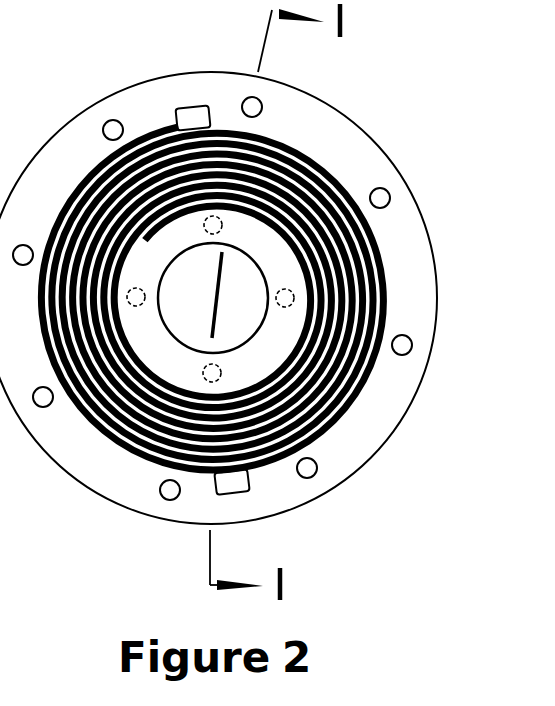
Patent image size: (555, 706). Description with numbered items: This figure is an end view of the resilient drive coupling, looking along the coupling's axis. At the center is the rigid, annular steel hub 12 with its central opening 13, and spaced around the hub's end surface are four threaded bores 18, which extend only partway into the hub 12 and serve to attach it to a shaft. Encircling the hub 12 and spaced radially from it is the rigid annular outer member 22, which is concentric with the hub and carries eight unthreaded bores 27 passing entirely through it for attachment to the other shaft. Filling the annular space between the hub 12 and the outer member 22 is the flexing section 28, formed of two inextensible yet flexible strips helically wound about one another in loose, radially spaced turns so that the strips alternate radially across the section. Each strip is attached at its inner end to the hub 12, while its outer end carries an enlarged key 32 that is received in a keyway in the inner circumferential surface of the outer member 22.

The hub 12 is at (263, 377).
The central opening 13 is at (184, 339).
The threaded bores 18 is at (213, 233).
The outer member 22 is at (282, 485).
The unthreaded bores 27 is at (23, 245).
The flexing section 28 is at (386, 250).
The key 32 is at (190, 117).